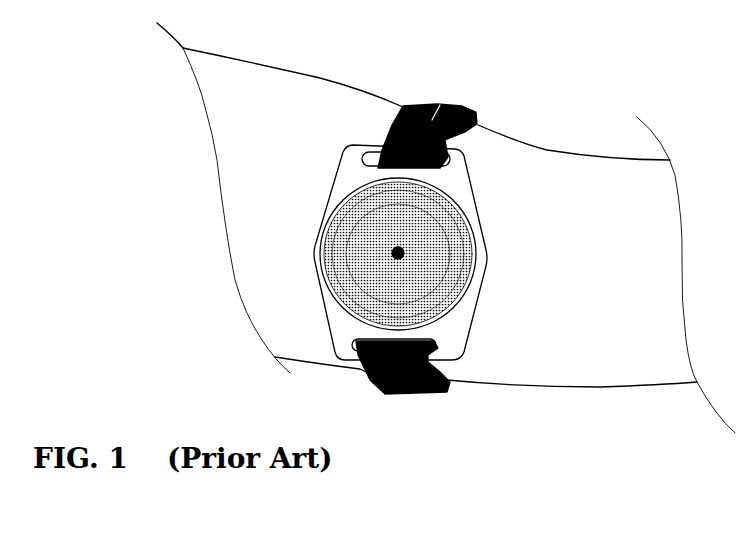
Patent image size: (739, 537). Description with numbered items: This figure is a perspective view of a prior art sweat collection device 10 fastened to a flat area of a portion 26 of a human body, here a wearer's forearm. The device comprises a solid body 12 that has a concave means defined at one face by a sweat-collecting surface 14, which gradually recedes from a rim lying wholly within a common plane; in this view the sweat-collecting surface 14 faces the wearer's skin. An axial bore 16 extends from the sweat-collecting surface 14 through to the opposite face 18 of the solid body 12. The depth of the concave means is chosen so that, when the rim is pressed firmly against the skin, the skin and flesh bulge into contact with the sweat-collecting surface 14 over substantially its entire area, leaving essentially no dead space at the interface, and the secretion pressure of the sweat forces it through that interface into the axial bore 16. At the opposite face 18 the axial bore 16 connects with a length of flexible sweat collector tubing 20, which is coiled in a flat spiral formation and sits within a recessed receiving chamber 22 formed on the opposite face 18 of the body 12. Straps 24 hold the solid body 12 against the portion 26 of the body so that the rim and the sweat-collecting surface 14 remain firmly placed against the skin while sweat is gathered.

The sweat collection device 10 is at (508, 158).
The solid body 12 is at (443, 328).
The sweat-collecting surface 14 is at (453, 257).
The axial bore 16 is at (398, 253).
The opposite face 18 is at (470, 307).
The sweat collector tubing 20 is at (347, 268).
The recessed receiving chamber 22 is at (333, 243).
The straps 24 is at (440, 105).
The portion of a human body 26 is at (243, 115).